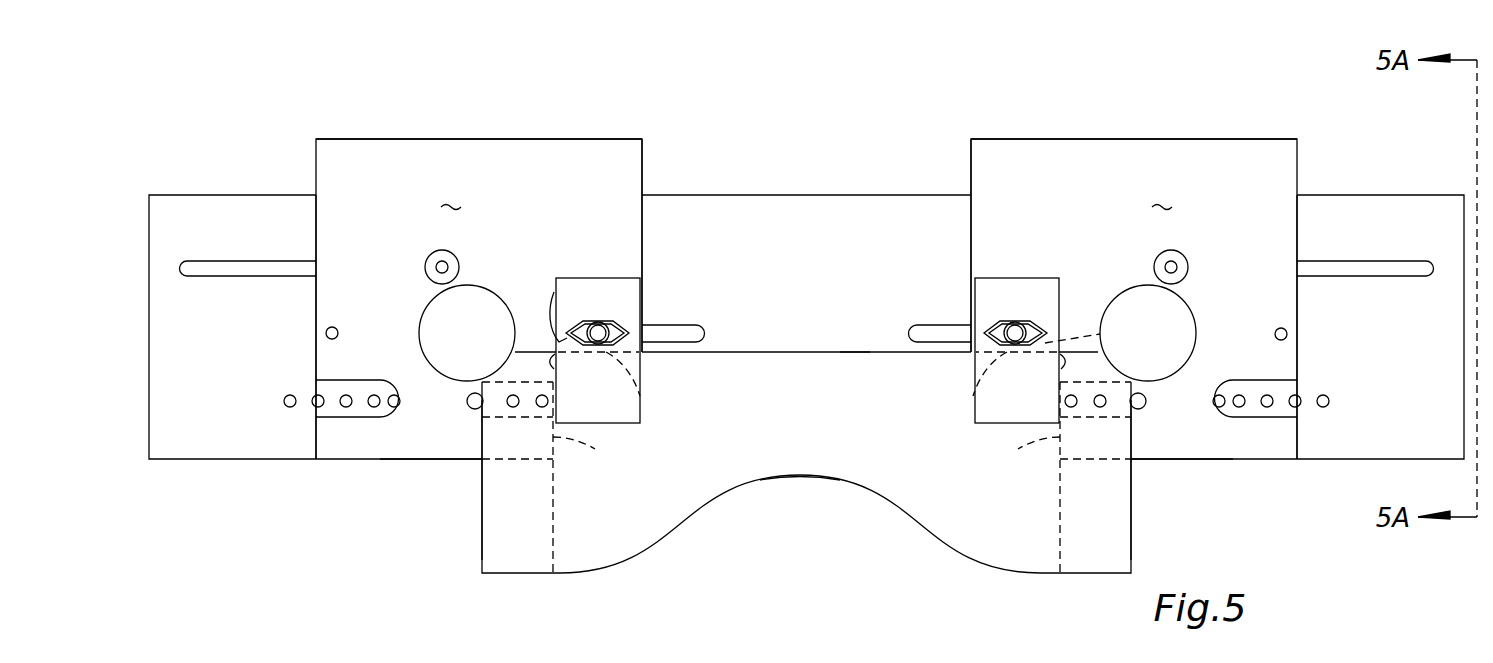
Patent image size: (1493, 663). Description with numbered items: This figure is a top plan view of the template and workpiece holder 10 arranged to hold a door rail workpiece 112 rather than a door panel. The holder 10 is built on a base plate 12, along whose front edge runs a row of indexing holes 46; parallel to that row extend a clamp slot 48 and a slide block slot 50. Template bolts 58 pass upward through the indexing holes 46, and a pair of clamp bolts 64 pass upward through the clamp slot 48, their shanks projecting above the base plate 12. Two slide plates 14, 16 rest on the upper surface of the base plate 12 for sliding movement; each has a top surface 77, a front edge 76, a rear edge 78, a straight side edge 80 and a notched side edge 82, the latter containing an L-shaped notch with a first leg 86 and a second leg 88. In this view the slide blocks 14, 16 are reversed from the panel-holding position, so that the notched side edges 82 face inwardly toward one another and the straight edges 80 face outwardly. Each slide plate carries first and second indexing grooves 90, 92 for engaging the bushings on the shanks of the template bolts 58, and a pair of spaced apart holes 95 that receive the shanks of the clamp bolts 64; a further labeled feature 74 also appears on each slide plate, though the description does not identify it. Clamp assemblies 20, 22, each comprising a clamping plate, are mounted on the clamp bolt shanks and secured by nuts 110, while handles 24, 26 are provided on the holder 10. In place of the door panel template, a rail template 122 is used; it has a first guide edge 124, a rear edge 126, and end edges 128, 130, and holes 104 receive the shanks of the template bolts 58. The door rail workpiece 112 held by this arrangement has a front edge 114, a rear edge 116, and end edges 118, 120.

The template and workpiece holder 10 is at (247, 128).
The base plate 12 is at (153, 193).
The slide plate 14 is at (390, 139).
The slide plate 16 is at (1227, 139).
The clamp assembly 20 is at (1050, 278).
The clamp assembly 22 is at (566, 279).
The handle 24 is at (437, 314).
The handle 26 is at (1180, 312).
The indexing holes 46 is at (318, 407).
The clamp slot 48 is at (695, 343).
The slide block slot 50 is at (190, 262).
The template bolts 58 is at (510, 405).
The clamp bolts 64 is at (600, 326).
The pivot post 74 is at (432, 257).
The front edge 76 is at (397, 460).
The top surface 77 is at (807, 196).
The rear edge 78 is at (497, 138).
The straight side edge 80 is at (316, 218).
The notched side edge 82 is at (643, 157).
The first leg 86 is at (644, 397).
The second leg 88 is at (806, 452).
The first indexing groove 90 is at (402, 405).
The second indexing groove 92 is at (470, 398).
The holes 95 is at (334, 328).
The holes 104 is at (543, 408).
The nuts 110 is at (596, 322).
The door rail workpiece 112 is at (553, 298).
The front edge 114 is at (785, 478).
The rear edge 116 is at (1102, 333).
The end edge 118 is at (535, 520).
The end edge 120 is at (1077, 520).
The rail template 122 is at (796, 356).
The first guide edge 124 is at (805, 480).
The rear edge 126 is at (853, 350).
The end edge 128 is at (480, 446).
The end edge 130 is at (1132, 447).